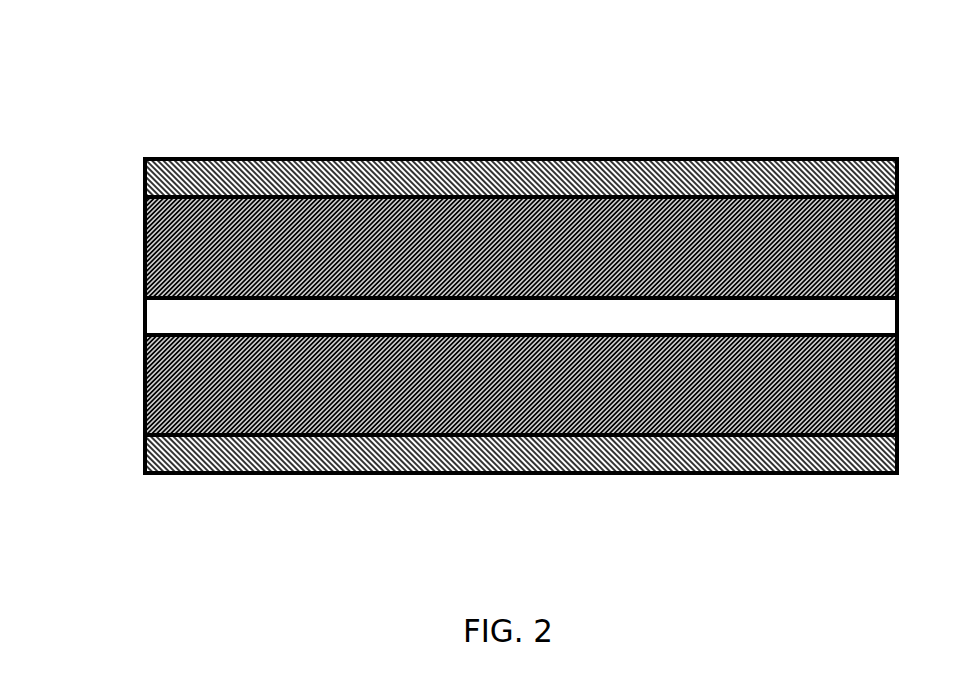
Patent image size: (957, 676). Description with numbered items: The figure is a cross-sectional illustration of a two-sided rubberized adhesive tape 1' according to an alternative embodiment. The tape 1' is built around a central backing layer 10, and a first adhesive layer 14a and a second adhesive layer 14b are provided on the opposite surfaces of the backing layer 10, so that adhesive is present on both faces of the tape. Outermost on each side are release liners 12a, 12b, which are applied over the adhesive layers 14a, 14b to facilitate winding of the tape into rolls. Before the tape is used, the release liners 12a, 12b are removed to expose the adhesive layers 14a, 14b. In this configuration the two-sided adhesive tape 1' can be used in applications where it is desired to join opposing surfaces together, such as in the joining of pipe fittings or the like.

The two-sided adhesive tape 1' is at (496, 255).
The release liner 12a is at (145, 180).
The first adhesive layer 14a is at (145, 273).
The backing layer 10 is at (145, 320).
The second adhesive layer 14b is at (145, 385).
The release liner 12b is at (145, 455).